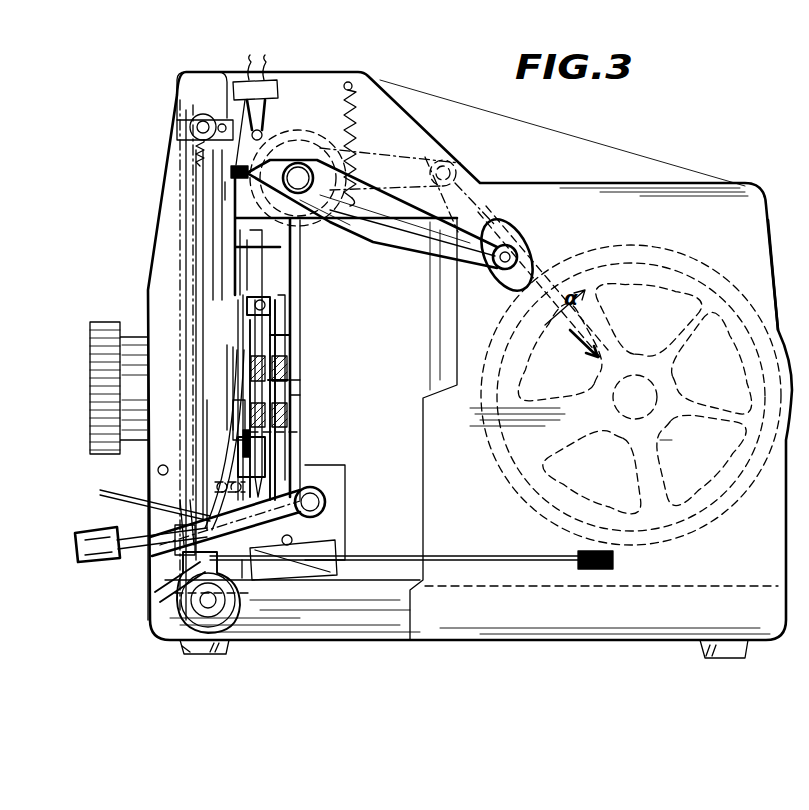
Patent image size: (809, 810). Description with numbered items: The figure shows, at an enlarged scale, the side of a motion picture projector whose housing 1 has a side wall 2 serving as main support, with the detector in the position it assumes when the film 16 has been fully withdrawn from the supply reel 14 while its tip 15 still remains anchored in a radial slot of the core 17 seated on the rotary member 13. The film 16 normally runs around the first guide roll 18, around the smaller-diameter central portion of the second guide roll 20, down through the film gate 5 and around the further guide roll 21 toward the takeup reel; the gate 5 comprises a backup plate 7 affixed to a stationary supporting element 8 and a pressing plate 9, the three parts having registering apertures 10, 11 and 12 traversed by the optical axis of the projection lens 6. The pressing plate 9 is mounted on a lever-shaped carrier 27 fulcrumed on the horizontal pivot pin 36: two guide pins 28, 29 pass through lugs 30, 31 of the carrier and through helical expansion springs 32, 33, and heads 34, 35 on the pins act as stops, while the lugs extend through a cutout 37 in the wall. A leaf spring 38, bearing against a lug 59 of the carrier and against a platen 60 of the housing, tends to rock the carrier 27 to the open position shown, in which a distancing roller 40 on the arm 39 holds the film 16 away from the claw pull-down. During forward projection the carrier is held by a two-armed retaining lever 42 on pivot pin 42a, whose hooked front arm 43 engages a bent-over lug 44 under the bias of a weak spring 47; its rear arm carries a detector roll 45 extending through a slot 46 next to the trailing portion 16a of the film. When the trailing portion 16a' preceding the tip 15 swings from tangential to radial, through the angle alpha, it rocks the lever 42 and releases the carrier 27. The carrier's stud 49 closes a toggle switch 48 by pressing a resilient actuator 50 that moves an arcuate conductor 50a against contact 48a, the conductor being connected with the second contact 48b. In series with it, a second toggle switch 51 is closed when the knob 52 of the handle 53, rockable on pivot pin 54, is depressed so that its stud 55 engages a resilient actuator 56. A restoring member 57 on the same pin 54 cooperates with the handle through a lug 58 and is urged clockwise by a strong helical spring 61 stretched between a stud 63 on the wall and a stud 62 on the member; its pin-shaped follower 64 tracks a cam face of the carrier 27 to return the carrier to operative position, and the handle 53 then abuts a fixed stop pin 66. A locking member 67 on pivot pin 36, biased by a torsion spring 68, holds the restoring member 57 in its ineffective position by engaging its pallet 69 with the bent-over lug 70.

The housing 1 is at (140, 261).
The side wall 2 is at (185, 160).
The film gate 5 is at (309, 294).
The projection lens 6 is at (92, 386).
The backup plate 7 is at (278, 442).
The stationary supporting element 8 is at (290, 236).
The pressing plate 9 is at (260, 300).
The aperture 10 is at (288, 408).
The aperture 11 is at (295, 385).
The aperture 12 is at (288, 365).
The rotary member 13 is at (631, 395).
The supply reel 14 is at (778, 290).
The tip 15 is at (585, 352).
The motion picture film 16 is at (425, 157).
The trailing portion 16a is at (615, 264).
The trailing portion preceding the tip 16a' is at (543, 281).
The core 17 is at (688, 454).
The first guide roll 18 is at (452, 164).
The second guide roll 20 is at (362, 74).
The further guide roll 21 is at (250, 590).
The carrier 27 is at (178, 228).
The guide pin 28 is at (300, 425).
The guide pin 29 is at (285, 305).
The lug 30 is at (228, 428).
The lug 31 is at (280, 348).
The helical expansion spring 32 is at (275, 460).
The helical expansion spring 33 is at (272, 330).
The head 34 is at (230, 405).
The head 35 is at (243, 292).
The horizontal pivot pin 36 is at (232, 632).
The cutout 37 is at (424, 444).
The leaf spring 38 is at (205, 492).
The arm 39 is at (240, 262).
The distancing roller 40 is at (318, 270).
The retaining lever 42 is at (398, 242).
The pivot pin 42a is at (407, 186).
The hook 43 is at (232, 172).
The lug 44 is at (233, 190).
The detector roll 45 is at (490, 290).
The slot 46 is at (510, 232).
The spring 47 is at (356, 150).
The toggle switch 48 is at (270, 82).
The electric contact 48a is at (248, 78).
The second electric contact 48b is at (280, 80).
The stud 49 is at (205, 113).
The resilient actuator 50 is at (223, 87).
The arcuate conductor 50a is at (280, 135).
The second toggle switch 51 is at (270, 580).
The knob 52 is at (95, 538).
The handle 53 is at (112, 556).
The pivot pin 54 is at (325, 502).
The stud 55 is at (302, 530).
The resilient actuator 56 is at (330, 556).
The restoring member 57 is at (280, 500).
The lug 58 is at (190, 515).
The lug 59 is at (232, 382).
The platen 60 is at (236, 357).
The helical spring 61 is at (195, 143).
The stud 62 is at (165, 565).
The stud 63 is at (190, 118).
The follower 64 is at (178, 578).
The stop pin 66 is at (160, 468).
The locking member 67 is at (175, 648).
The torsion spring 68 is at (178, 625).
The pallet 69 is at (175, 535).
The lug 70 is at (185, 592).